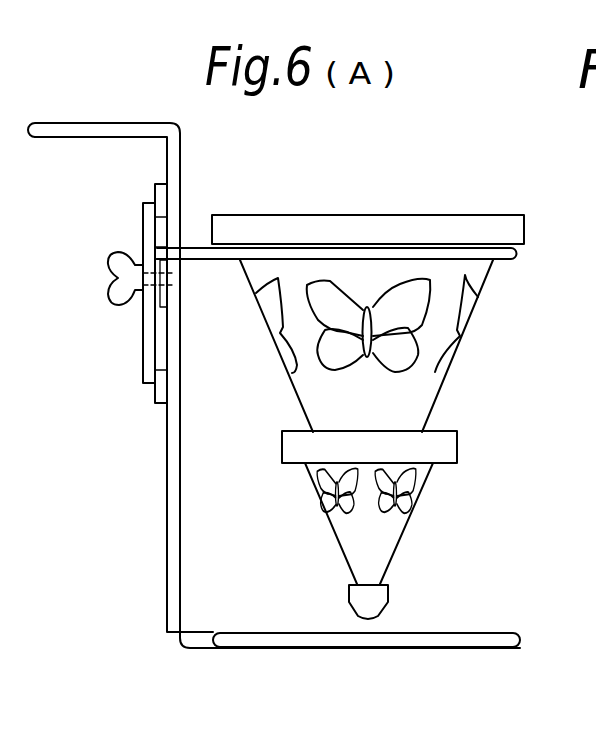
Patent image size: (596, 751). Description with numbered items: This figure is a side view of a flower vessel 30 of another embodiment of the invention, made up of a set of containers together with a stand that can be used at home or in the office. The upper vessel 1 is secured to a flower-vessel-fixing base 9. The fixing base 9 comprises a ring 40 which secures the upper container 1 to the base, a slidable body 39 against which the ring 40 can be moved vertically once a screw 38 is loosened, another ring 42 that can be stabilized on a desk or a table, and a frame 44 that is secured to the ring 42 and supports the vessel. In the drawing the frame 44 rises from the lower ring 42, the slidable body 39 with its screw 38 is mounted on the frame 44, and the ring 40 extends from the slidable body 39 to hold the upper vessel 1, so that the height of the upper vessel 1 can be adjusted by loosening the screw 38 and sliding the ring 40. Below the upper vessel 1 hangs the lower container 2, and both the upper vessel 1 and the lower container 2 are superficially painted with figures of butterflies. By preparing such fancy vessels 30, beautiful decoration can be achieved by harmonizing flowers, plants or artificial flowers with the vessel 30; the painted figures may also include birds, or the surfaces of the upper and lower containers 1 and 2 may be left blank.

The flower-vessel-fixing base 9 is at (127, 120).
The flower vessel 30 is at (513, 155).
The slidable body 39 is at (147, 216).
The ring 40 is at (516, 253).
The screw 38 is at (112, 302).
The upper vessel 1 is at (485, 287).
The frame 44 is at (173, 488).
The lower container 2 is at (402, 540).
The ring 42 is at (320, 642).